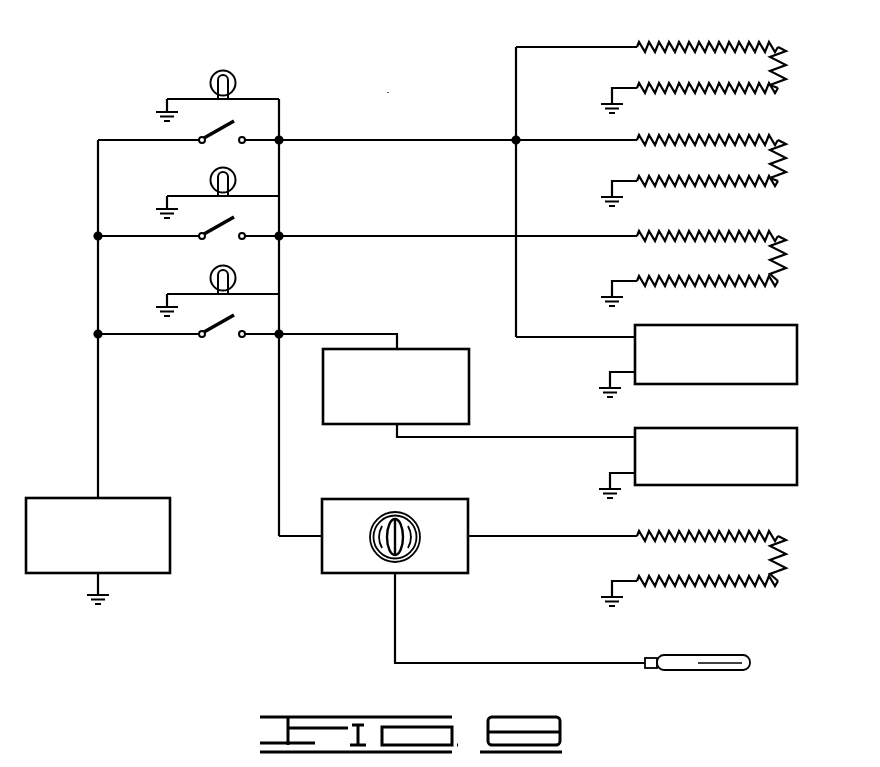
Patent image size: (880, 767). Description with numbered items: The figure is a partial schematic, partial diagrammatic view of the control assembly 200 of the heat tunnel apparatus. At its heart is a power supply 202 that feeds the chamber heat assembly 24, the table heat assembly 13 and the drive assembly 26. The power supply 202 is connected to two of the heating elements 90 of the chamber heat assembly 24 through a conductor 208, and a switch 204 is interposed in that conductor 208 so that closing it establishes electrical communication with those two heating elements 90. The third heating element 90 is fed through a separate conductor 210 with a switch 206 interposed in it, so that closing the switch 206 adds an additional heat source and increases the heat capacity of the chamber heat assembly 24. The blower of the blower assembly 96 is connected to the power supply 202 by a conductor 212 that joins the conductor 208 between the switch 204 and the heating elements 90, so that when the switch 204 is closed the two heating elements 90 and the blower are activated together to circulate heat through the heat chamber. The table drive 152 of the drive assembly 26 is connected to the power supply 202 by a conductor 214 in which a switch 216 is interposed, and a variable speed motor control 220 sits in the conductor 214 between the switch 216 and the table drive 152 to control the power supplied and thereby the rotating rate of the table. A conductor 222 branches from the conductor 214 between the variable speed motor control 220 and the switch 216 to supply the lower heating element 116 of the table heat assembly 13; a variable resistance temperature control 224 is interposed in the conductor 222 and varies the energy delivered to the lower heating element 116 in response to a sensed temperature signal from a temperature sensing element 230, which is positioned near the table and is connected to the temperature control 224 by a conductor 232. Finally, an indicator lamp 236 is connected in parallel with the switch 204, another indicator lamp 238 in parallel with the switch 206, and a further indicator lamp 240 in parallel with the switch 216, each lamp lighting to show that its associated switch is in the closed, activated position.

The control assembly 200 is at (388, 92).
The power supply 202 is at (150, 498).
The switch 204 is at (222, 132).
The switch 206 is at (222, 230).
The conductor 208 is at (133, 140).
The conductor 210 is at (142, 236).
The conductor 212 is at (514, 259).
The conductor 214 is at (521, 441).
The switch 216 is at (224, 326).
The variable speed motor control 220 is at (445, 340).
The conductor 222 is at (514, 539).
The variable resistance temperature control 224 is at (388, 493).
The temperature sensing element 230 is at (695, 663).
The conductor 232 is at (488, 663).
The indicator lamp 236 is at (236, 83).
The indicator lamp 238 is at (236, 179).
The indicator lamp 240 is at (236, 275).
The chamber heat assembly 24 is at (786, 37).
The drive assembly 26 is at (490, 415).
The heating elements 90 is at (697, 232).
The blower assembly 96 is at (750, 318).
The table drive 152 is at (718, 428).
The table heat assembly 13 is at (788, 530).
The lower heating element 116 is at (748, 597).